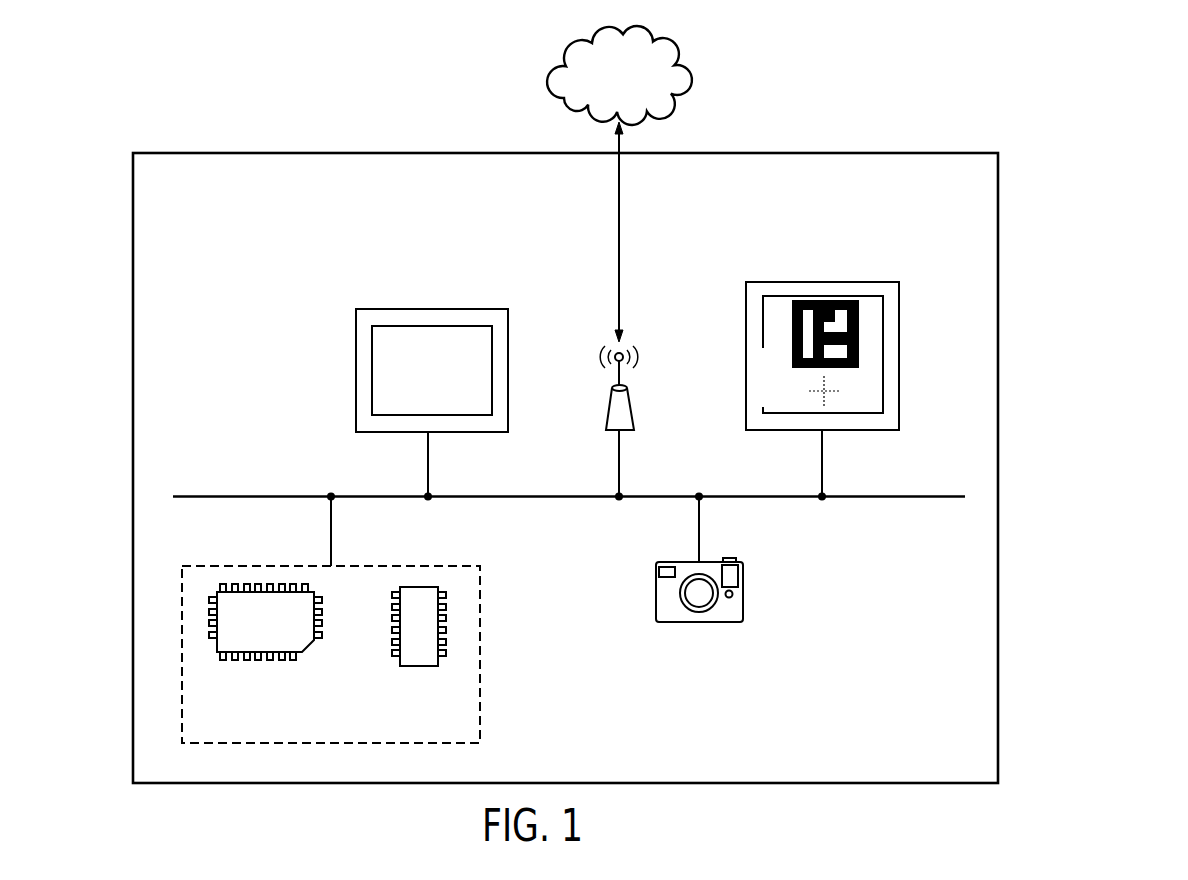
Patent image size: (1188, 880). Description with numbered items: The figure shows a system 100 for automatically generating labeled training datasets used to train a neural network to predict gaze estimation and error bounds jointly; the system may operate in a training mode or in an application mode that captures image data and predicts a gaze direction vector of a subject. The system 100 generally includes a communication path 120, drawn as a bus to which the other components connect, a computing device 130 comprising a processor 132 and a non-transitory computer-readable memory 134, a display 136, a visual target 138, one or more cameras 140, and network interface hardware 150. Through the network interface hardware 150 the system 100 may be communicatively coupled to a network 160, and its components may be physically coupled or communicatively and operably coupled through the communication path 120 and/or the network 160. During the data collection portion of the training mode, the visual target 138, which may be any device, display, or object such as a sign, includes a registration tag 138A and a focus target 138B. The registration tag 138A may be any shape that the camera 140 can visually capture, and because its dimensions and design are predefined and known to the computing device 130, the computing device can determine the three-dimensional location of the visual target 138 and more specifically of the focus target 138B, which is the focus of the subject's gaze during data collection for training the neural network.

The system 100 is at (1080, 172).
The communication path 120 is at (913, 495).
The computing device 130 is at (480, 658).
The processor 132 is at (306, 650).
The non-transitory computer-readable memory 134 is at (418, 667).
The display 136 is at (437, 309).
The visual target 138 is at (781, 359).
The registration tag 138A is at (793, 347).
The focus target 138B is at (788, 392).
The camera 140 is at (699, 623).
The network interface hardware 150 is at (609, 395).
The network 160 is at (548, 76).